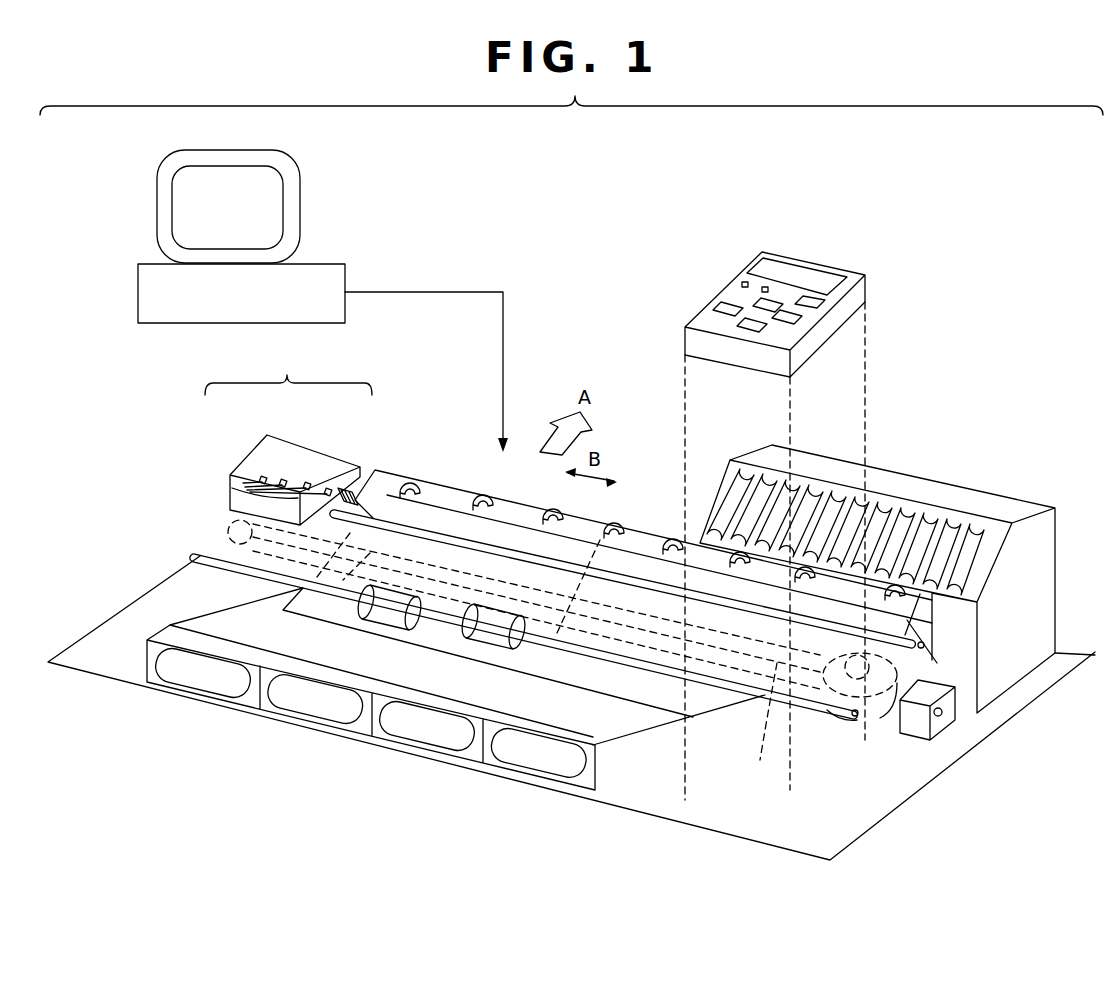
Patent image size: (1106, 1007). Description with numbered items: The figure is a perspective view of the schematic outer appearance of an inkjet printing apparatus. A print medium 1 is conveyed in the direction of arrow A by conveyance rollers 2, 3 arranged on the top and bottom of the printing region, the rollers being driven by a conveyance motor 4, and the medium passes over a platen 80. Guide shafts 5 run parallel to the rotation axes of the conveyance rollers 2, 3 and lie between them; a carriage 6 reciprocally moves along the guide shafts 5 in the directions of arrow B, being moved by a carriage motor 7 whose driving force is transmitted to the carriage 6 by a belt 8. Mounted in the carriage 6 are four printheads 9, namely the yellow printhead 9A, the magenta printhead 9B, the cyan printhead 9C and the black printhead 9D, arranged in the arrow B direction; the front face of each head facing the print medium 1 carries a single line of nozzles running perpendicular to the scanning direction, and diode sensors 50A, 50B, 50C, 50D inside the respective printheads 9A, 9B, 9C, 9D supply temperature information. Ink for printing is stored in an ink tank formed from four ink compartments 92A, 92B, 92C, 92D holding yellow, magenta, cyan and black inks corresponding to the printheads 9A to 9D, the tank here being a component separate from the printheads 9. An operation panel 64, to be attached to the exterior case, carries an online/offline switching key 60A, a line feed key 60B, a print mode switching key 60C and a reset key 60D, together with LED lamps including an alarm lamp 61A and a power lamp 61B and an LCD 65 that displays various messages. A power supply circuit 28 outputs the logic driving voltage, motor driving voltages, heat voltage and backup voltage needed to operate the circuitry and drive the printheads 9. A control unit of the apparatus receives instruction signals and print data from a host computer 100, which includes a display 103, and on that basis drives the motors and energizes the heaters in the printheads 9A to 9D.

The print medium 1 is at (436, 512).
The conveyance roller 2 is at (616, 523).
The conveyance roller 3 is at (488, 638).
The conveyance motor 4 is at (935, 732).
The guide shafts 5 is at (926, 644).
The carriage 6 is at (238, 465).
The carriage motor 7 is at (878, 717).
The belt 8 is at (764, 727).
The printheads 9 is at (288, 421).
The printhead (Y head) 9A is at (328, 489).
The printhead (M head) 9B is at (306, 484).
The printhead (C head) 9C is at (283, 482).
The printhead (K head) 9D is at (262, 478).
The power supply circuit 28 is at (927, 490).
The diode sensor 50A is at (250, 492).
The diode sensor 50B is at (247, 490).
The diode sensor 50C is at (245, 487).
The diode sensor 50D is at (243, 483).
The online/offline switching key 60A is at (812, 307).
The line feed key 60B is at (785, 297).
The print mode switching key 60C is at (700, 309).
The reset key 60D is at (748, 327).
The alarm lamp 61A is at (765, 287).
The power lamp 61B is at (740, 283).
The operation panel 64 is at (774, 500).
The LCD 65 is at (787, 270).
The platen 80 is at (912, 612).
The ink compartment 92A is at (530, 758).
The ink compartment 92B is at (413, 732).
The ink compartment 92C is at (297, 703).
The ink compartment 92D is at (180, 677).
The host computer 100 is at (331, 263).
The display 103 is at (300, 176).